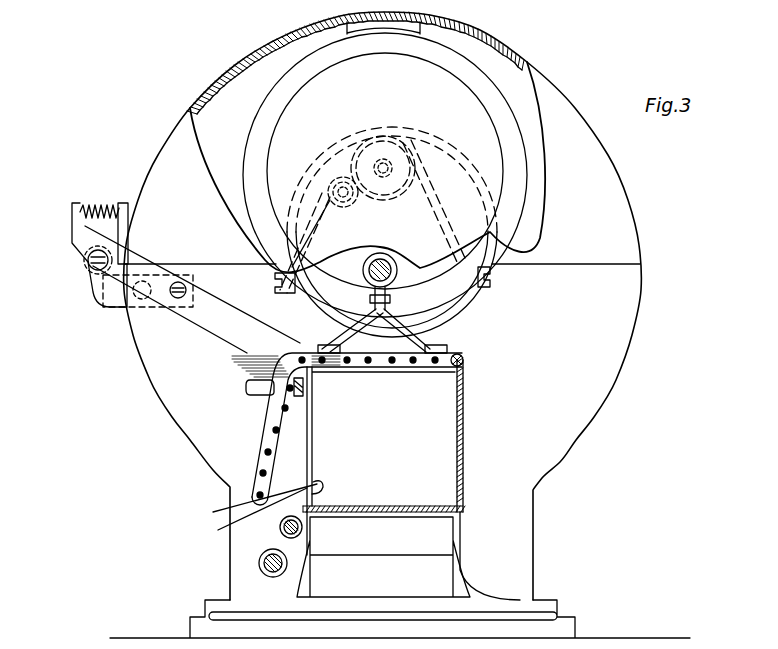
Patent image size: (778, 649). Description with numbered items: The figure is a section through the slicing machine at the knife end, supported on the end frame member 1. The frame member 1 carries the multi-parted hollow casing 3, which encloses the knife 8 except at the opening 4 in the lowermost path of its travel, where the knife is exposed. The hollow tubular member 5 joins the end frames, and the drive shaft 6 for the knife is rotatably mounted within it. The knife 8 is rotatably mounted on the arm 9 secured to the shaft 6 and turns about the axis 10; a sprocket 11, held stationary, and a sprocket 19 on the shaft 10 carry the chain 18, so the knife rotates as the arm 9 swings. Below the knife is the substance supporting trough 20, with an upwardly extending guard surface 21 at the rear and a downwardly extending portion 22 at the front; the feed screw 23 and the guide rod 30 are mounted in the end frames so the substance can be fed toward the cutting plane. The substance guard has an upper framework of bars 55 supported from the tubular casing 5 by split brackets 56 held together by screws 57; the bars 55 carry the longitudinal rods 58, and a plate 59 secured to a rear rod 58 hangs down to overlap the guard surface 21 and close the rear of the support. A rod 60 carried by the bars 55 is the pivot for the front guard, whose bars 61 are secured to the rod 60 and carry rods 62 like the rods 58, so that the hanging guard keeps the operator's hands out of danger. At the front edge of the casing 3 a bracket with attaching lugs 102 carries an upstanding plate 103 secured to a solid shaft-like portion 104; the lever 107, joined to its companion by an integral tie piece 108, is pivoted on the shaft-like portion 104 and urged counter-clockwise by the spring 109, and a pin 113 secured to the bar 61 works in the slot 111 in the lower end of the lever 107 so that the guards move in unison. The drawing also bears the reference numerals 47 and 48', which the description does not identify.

The end frame member 1 is at (525, 587).
The multi-parted hollow casing 3 is at (553, 85).
The opening 4 is at (251, 515).
The hollow tubular member 5 is at (326, 222).
The drive shaft 6 is at (433, 244).
The knife 8 is at (527, 63).
The arm 9 is at (444, 200).
The axis 10 is at (392, 162).
The sprocket 11 is at (450, 230).
The chain 18 is at (327, 207).
The sprocket 19 is at (443, 178).
The substance supporting trough 20 is at (400, 515).
The upwardly extending guard surface 21 is at (457, 482).
The downwardly extending portion 22 is at (310, 527).
The feed screw 23 is at (259, 565).
The guide rod 30 is at (280, 531).
The rod 47 is at (255, 502).
The clamp 48' is at (422, 20).
The bars 55 is at (462, 357).
The brackets 56 is at (450, 348).
The screws 57 is at (300, 300).
The rods 58 is at (465, 358).
The plate 59 is at (462, 413).
The rod 60 is at (324, 363).
The bars 61 is at (257, 490).
The rods 62 is at (260, 473).
The attaching lugs 102 is at (193, 280).
The upstanding plate 103 is at (123, 205).
The shaft-like portion 104 is at (84, 260).
The lever 107 is at (207, 322).
The tie piece 108 is at (77, 237).
The spring 109 is at (92, 206).
The slot 111 is at (266, 396).
The pin 113 is at (277, 364).